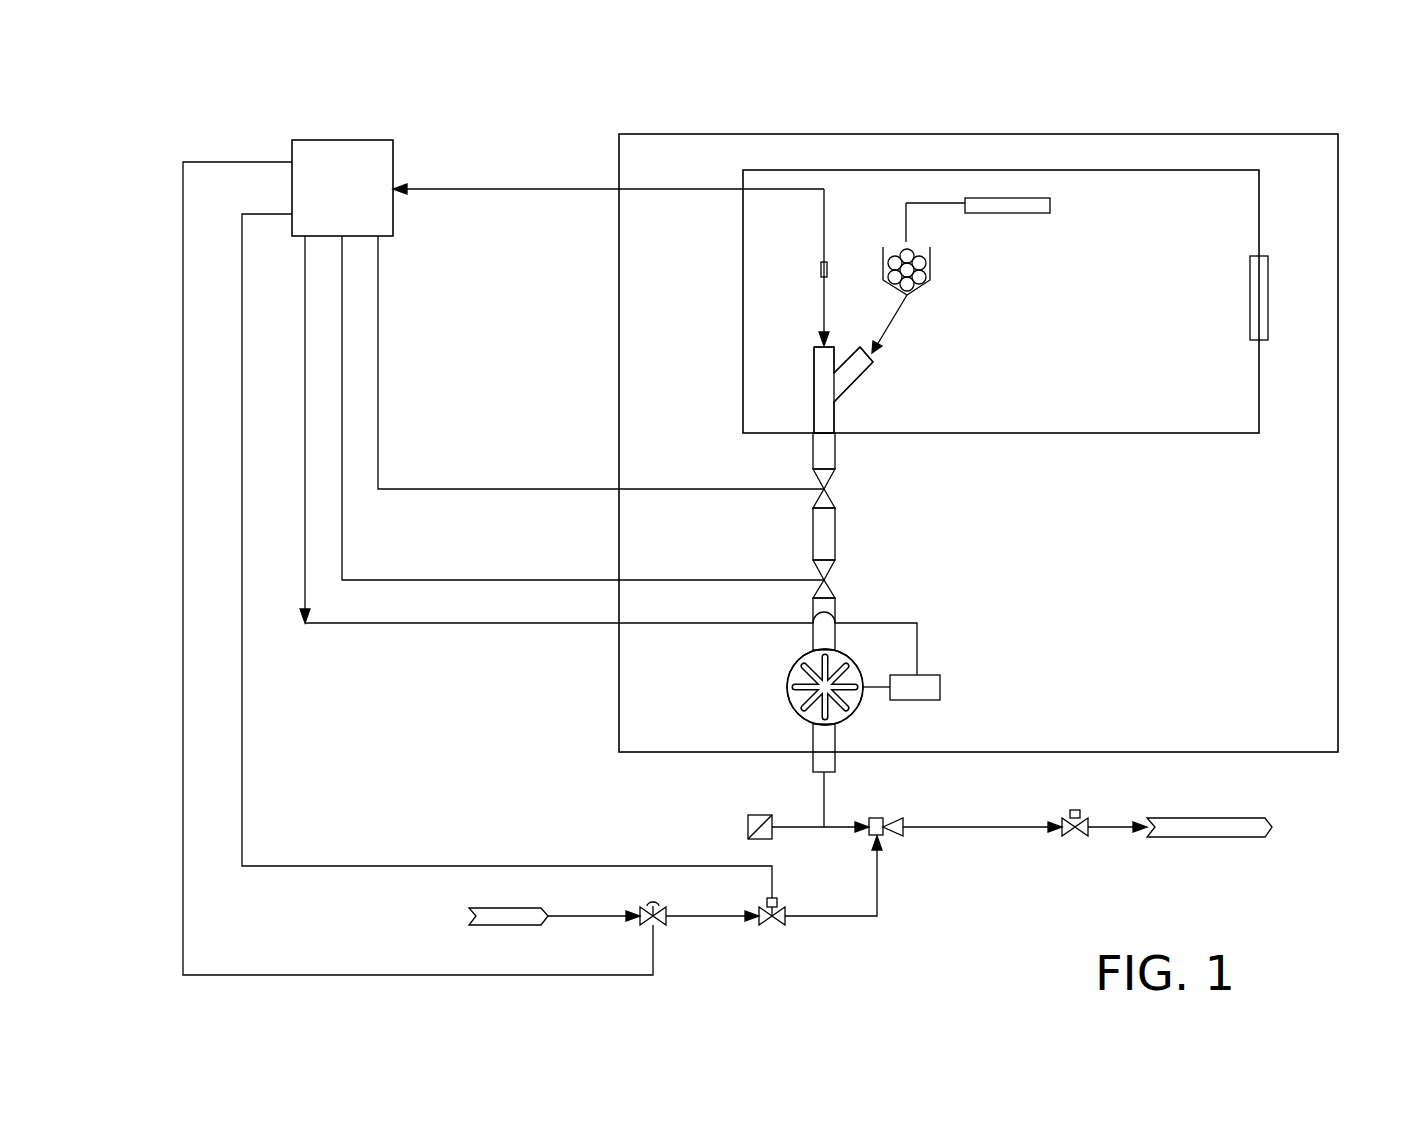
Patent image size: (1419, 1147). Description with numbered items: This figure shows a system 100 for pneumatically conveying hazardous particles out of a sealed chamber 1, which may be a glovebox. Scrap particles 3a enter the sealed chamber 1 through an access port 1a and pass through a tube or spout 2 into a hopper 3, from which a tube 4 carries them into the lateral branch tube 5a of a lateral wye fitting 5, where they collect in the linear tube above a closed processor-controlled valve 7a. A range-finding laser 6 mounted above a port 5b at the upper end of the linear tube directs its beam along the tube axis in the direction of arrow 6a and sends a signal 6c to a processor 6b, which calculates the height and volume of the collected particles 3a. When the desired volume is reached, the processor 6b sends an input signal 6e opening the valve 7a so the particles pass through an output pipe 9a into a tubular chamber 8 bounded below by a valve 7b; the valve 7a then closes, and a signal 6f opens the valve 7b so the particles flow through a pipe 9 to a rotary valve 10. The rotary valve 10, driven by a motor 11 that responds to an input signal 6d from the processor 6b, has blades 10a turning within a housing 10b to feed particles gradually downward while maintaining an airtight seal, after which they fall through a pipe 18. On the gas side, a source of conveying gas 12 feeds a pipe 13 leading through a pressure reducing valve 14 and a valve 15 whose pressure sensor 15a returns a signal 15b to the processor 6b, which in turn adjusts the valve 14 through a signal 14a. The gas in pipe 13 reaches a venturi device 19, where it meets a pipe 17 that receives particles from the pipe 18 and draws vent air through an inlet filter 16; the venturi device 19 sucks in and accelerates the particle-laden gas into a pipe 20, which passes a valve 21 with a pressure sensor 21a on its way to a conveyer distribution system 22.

The system 100 is at (1296, 114).
The sealed chamber 1 is at (1260, 394).
The access port 1a is at (1250, 298).
The tube or spout 2 is at (928, 203).
The hopper 3 is at (932, 258).
The scrap particles 3a is at (900, 250).
The tube 4 is at (890, 318).
The lateral wye fitting 5 is at (836, 410).
The lateral branch tube 5a is at (868, 380).
The port 5b is at (814, 362).
The range-finding laser 6 is at (820, 268).
The laser beam direction arrow 6a is at (822, 304).
The processor 6b is at (358, 200).
The signal 6c is at (495, 187).
The input signal 6d is at (303, 458).
The input signal 6e is at (378, 298).
The signal 6f is at (342, 376).
The processor-controlled valve 7a is at (815, 480).
The valve 7b is at (815, 568).
The tubular chamber 8 is at (836, 530).
The tube or pipe 9 is at (836, 602).
The output pipe 9a is at (836, 455).
The rotary valve 10 is at (795, 666).
The blades 10a is at (795, 703).
The housing 10b is at (790, 688).
The motor 11 is at (942, 684).
The source of conveying gas 12 is at (500, 907).
The pipe 13 is at (585, 914).
The pressure reducing valve 14 is at (652, 904).
The signal 14a is at (268, 975).
The valve 15 is at (778, 924).
The pressure sensor 15a is at (765, 900).
The signal 15b is at (242, 330).
The inlet filter 16 is at (751, 814).
The pipe 17 is at (803, 830).
The pipe 18 is at (826, 798).
The venturi device 19 is at (887, 836).
The pipe 20 is at (985, 826).
The valve 21 is at (1075, 837).
The pressure sensor 21a is at (1080, 812).
The conveyer distribution system 22 is at (1225, 838).